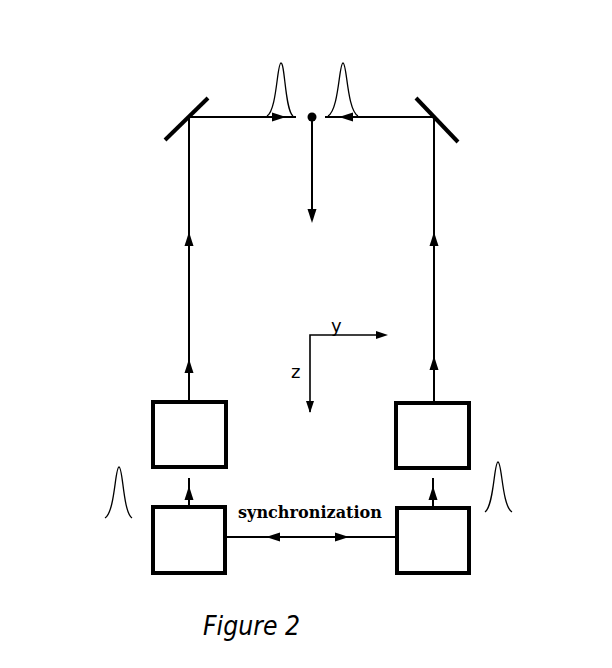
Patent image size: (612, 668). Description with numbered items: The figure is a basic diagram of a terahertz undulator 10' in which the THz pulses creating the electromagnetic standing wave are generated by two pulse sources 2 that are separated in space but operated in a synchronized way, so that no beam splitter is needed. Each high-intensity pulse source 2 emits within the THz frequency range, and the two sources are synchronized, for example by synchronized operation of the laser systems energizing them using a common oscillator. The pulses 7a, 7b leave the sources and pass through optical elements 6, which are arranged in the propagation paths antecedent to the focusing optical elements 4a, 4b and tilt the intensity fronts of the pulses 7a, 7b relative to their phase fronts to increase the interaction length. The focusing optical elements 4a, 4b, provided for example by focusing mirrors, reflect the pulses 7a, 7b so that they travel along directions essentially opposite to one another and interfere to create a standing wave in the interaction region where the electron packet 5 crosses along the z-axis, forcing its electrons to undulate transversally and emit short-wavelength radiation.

The pulse source 2 is at (289, 528).
The focusing optical element 4a is at (171, 119).
The focusing optical element 4b is at (453, 120).
The electron packet 5 is at (321, 168).
The optical element 6 is at (289, 435).
The pulse 7a is at (184, 271).
The pulse 7b is at (443, 268).
The terahertz undulator 10' is at (85, 320).